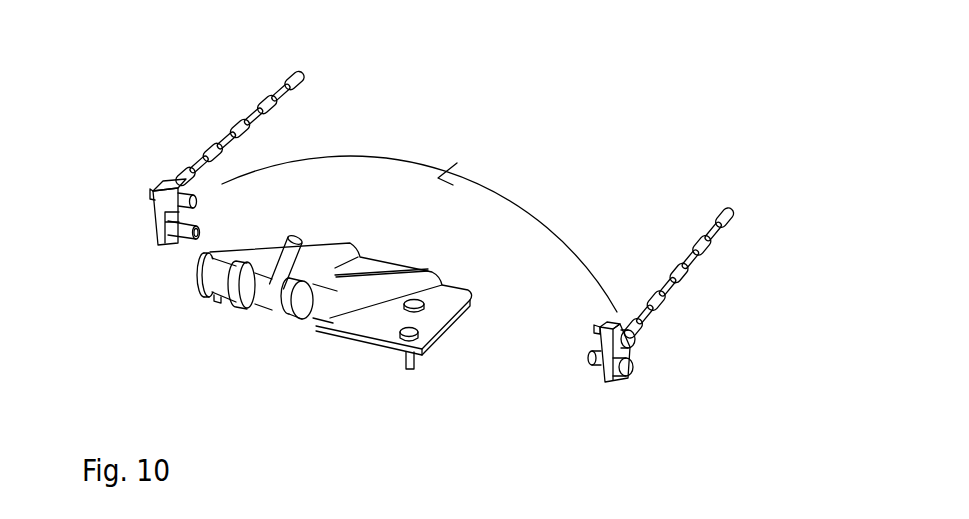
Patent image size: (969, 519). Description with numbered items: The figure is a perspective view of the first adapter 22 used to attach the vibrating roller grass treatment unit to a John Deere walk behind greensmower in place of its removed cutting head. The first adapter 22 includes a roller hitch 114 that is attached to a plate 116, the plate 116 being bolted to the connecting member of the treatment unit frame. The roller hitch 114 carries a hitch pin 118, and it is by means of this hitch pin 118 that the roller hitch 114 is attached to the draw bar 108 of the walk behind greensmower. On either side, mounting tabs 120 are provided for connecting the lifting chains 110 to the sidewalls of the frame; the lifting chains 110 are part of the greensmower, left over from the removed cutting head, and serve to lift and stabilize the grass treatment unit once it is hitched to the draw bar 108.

The first adapter 22 is at (419, 220).
The draw bar 108 is at (285, 253).
The lifting chains 110 is at (277, 126).
The roller hitch 114 is at (323, 302).
The plate 116 is at (438, 315).
The hitch pin 118 is at (222, 283).
The mounting tabs 120 is at (160, 233).